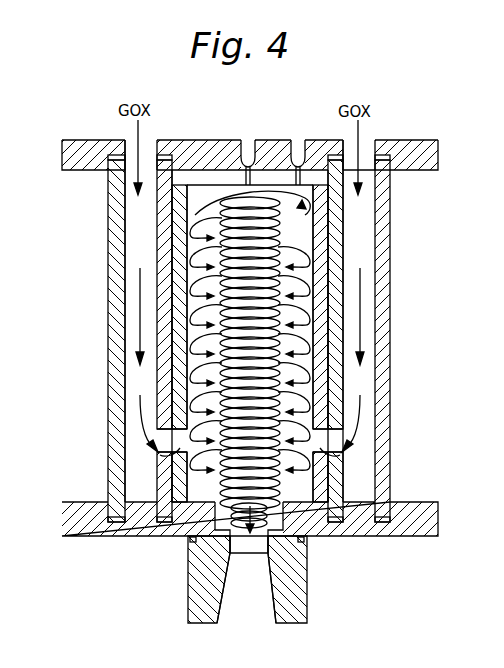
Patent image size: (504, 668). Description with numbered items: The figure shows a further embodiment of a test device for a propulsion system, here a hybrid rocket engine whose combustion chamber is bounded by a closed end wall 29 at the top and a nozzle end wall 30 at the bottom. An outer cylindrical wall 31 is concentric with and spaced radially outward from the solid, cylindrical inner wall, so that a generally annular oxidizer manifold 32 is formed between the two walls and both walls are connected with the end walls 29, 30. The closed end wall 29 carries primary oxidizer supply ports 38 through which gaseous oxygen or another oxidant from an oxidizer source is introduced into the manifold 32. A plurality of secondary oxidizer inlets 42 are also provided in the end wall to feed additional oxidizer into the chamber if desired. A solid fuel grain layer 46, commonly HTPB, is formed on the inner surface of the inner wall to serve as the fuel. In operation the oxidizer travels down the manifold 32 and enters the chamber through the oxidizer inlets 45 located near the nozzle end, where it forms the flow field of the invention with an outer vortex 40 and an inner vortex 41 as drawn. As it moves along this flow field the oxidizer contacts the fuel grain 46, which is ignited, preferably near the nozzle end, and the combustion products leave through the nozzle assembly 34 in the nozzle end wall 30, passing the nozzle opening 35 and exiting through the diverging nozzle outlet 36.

The closed end wall 29 is at (179, 141).
The nozzle end wall 30 is at (128, 527).
The outer cylindrical wall 31 is at (383, 281).
The annular oxidizer manifold 32 is at (361, 222).
The nozzle assembly 34 is at (198, 578).
The nozzle opening 35 is at (290, 555).
The diverging nozzle outlet 36 is at (280, 601).
The primary oxidizer supply ports 38 is at (133, 146).
The outer vortex 40 is at (180, 212).
The inner vortex 41 is at (190, 262).
The secondary oxidizer inlets 42 is at (298, 143).
The oxidizer inlets 45 is at (167, 460).
The solid fuel grain layer 46 is at (321, 258).